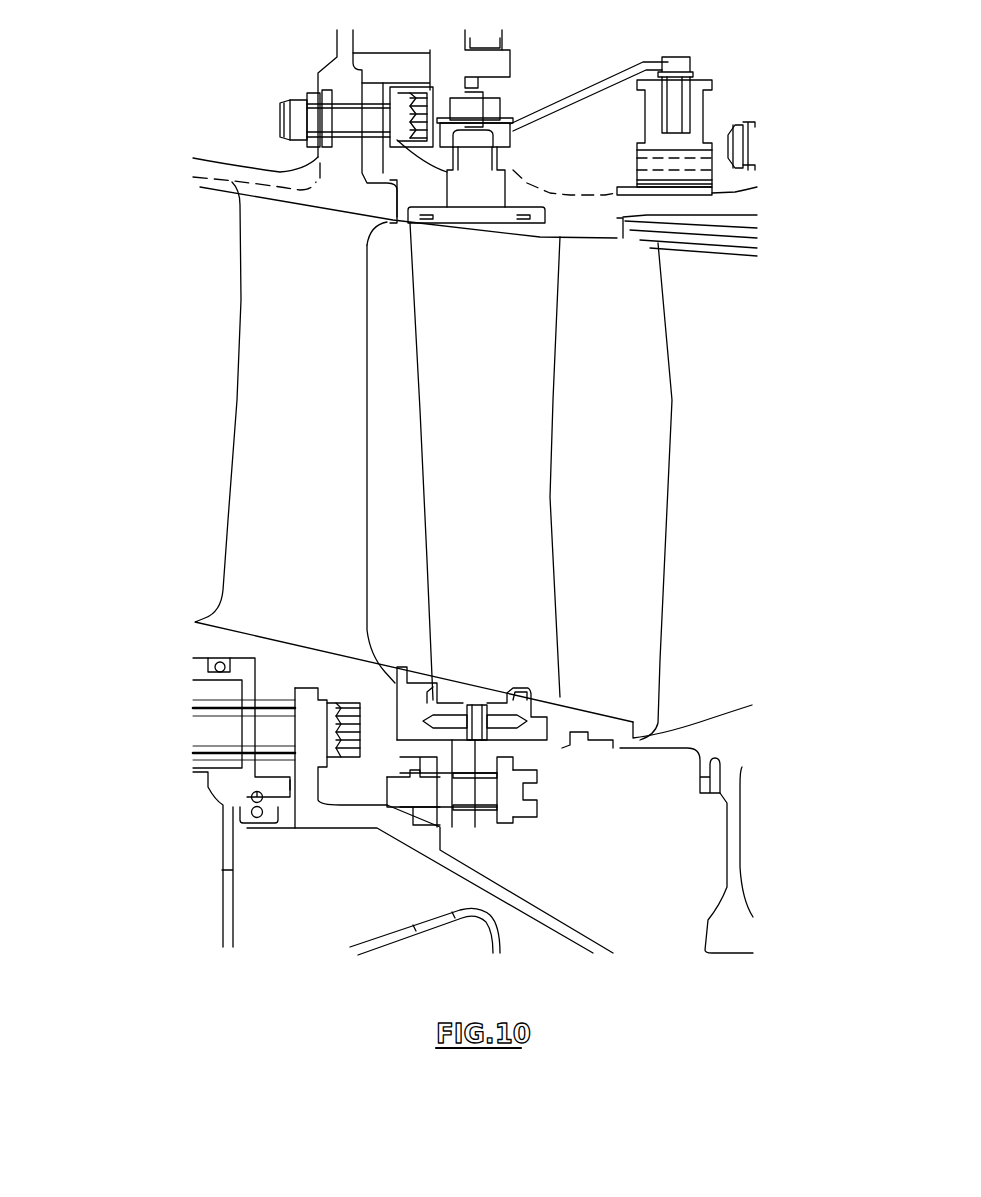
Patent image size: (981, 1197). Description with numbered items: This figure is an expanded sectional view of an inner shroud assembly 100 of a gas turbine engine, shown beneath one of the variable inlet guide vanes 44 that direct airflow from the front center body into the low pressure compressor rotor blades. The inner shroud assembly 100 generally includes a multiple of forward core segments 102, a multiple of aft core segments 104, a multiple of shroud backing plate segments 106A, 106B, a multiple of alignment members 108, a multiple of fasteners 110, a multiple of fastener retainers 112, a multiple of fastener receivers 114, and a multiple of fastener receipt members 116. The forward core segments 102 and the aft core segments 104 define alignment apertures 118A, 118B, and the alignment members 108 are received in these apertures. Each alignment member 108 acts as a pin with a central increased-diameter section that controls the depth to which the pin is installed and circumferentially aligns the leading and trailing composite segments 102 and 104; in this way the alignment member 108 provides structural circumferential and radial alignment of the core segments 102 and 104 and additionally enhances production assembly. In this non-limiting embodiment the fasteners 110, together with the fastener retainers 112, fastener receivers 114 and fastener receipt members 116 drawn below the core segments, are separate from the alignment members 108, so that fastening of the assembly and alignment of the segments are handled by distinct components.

The variable inlet guide vanes 44 is at (479, 424).
The inner shroud assembly 100 is at (752, 490).
The forward core segments 102 is at (457, 688).
The aft core segments 104 is at (482, 690).
The shroud backing plate segment 106A is at (400, 717).
The shroud backing plate segment 106B is at (575, 725).
The alignment members 108 is at (478, 712).
The fasteners 110 is at (552, 797).
The fastener retainers 112 is at (515, 815).
The fastener receivers 114 is at (432, 820).
The fastener receipt members 116 is at (465, 812).
The alignment aperture 118A is at (450, 710).
The alignment aperture 118B is at (513, 710).